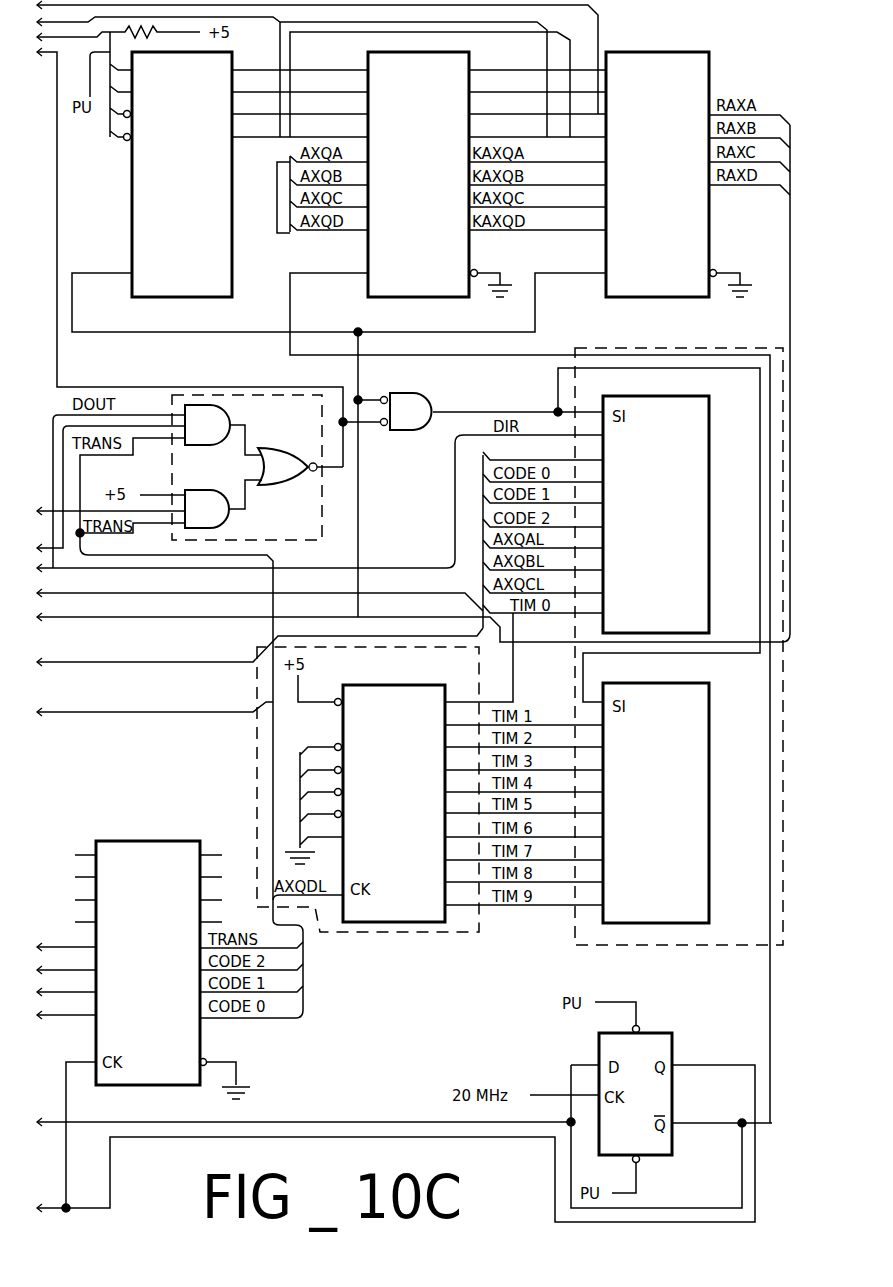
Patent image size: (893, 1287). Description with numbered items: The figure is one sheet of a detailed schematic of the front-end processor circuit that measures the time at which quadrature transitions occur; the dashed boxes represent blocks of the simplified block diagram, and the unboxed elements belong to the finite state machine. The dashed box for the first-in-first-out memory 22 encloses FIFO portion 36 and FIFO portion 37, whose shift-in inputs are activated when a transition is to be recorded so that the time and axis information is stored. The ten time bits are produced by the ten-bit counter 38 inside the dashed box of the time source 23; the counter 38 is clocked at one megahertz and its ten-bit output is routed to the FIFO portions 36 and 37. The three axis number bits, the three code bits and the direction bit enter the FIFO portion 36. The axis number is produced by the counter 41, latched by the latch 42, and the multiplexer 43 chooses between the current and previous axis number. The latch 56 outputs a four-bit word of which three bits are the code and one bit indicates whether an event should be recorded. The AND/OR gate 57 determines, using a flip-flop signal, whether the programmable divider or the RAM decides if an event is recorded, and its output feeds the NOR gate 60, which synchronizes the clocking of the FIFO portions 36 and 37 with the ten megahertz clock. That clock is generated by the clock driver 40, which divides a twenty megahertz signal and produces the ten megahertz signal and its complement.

The first-in-first-out memory 22 is at (585, 953).
The time source 23 is at (455, 948).
The FIFO portion 36 is at (668, 513).
The FIFO portion 37 is at (668, 788).
The ten-bit counter 38 is at (407, 788).
The clock driver 40 is at (599, 1040).
The counter 41 is at (193, 175).
The latch 42 is at (430, 175).
The multiplexer 43 is at (669, 175).
The latch 56 is at (159, 948).
The AND/OR gate 57 is at (323, 490).
The NOR gate 60 is at (432, 397).